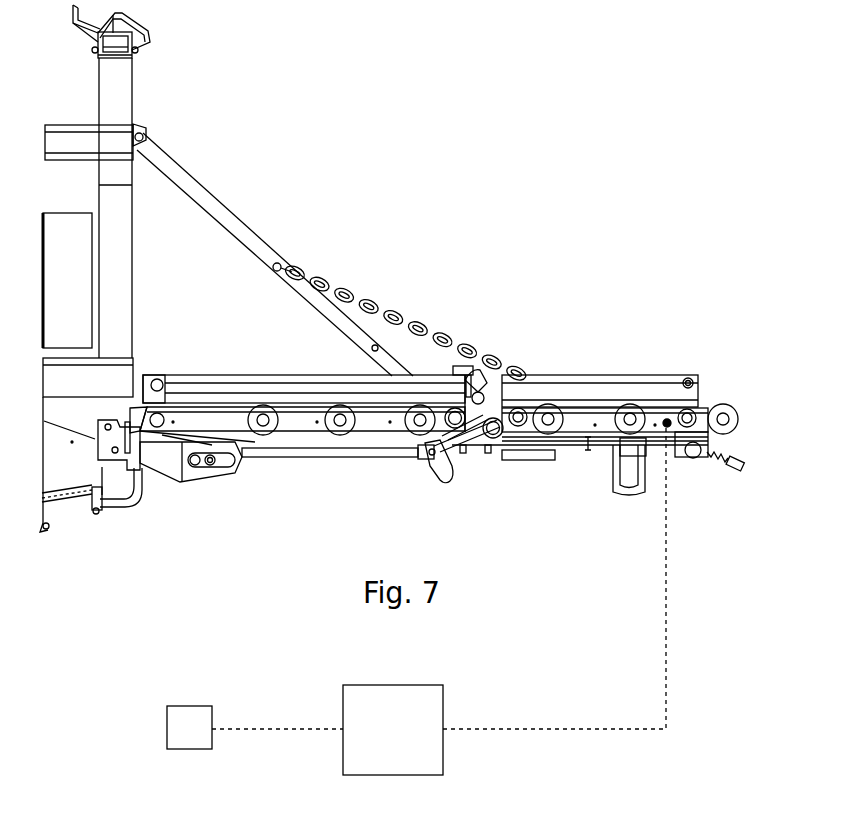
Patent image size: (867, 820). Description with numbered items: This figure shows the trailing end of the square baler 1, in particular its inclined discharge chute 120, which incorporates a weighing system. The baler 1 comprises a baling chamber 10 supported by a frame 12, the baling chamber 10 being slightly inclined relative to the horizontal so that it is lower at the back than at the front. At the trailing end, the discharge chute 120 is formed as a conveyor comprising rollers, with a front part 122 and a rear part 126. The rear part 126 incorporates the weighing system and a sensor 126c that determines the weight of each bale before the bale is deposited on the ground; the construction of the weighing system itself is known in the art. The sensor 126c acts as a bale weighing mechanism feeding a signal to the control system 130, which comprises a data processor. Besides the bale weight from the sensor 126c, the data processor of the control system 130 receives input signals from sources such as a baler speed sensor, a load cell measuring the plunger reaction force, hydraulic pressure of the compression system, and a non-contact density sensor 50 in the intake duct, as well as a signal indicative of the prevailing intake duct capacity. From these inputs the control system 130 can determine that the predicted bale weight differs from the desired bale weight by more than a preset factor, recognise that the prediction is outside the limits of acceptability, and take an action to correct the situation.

The square baler 1 is at (178, 95).
The baling chamber 10 is at (68, 253).
The frame 12 is at (87, 510).
The discharge chute 120 is at (467, 205).
The front part 122 is at (240, 344).
The rear part 126 is at (618, 335).
The sensor 126c is at (668, 427).
The control system 130 is at (740, 413).
The non-contact density sensor 50 is at (255, 727).